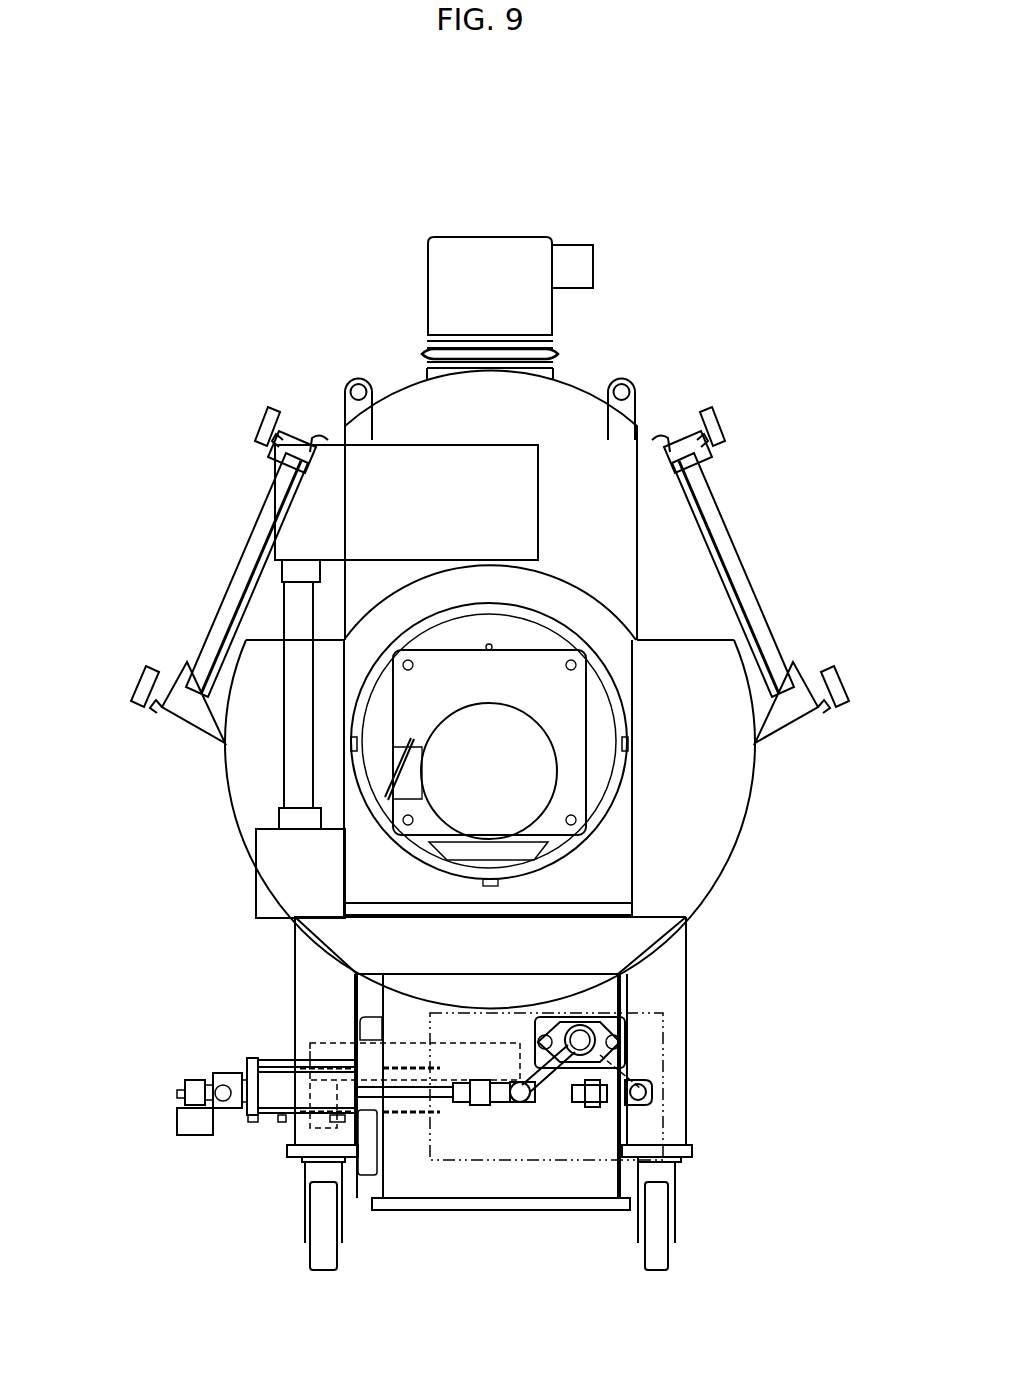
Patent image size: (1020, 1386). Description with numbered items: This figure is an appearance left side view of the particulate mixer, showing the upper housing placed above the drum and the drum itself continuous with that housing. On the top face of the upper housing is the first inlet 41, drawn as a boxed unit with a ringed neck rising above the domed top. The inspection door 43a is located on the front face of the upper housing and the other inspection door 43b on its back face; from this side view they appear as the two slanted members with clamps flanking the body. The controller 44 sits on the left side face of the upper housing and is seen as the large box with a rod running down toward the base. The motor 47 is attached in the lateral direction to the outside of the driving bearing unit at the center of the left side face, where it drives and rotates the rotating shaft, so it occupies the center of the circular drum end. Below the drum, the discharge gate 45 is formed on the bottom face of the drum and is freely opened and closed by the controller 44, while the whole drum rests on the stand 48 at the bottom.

The first inlet 41 is at (467, 253).
The inspection door 43a is at (735, 552).
The inspection door 43b is at (238, 563).
The controller 44 is at (300, 470).
The discharge gate 45 is at (527, 1095).
The motor 47 is at (519, 781).
The stand 48 is at (672, 1095).